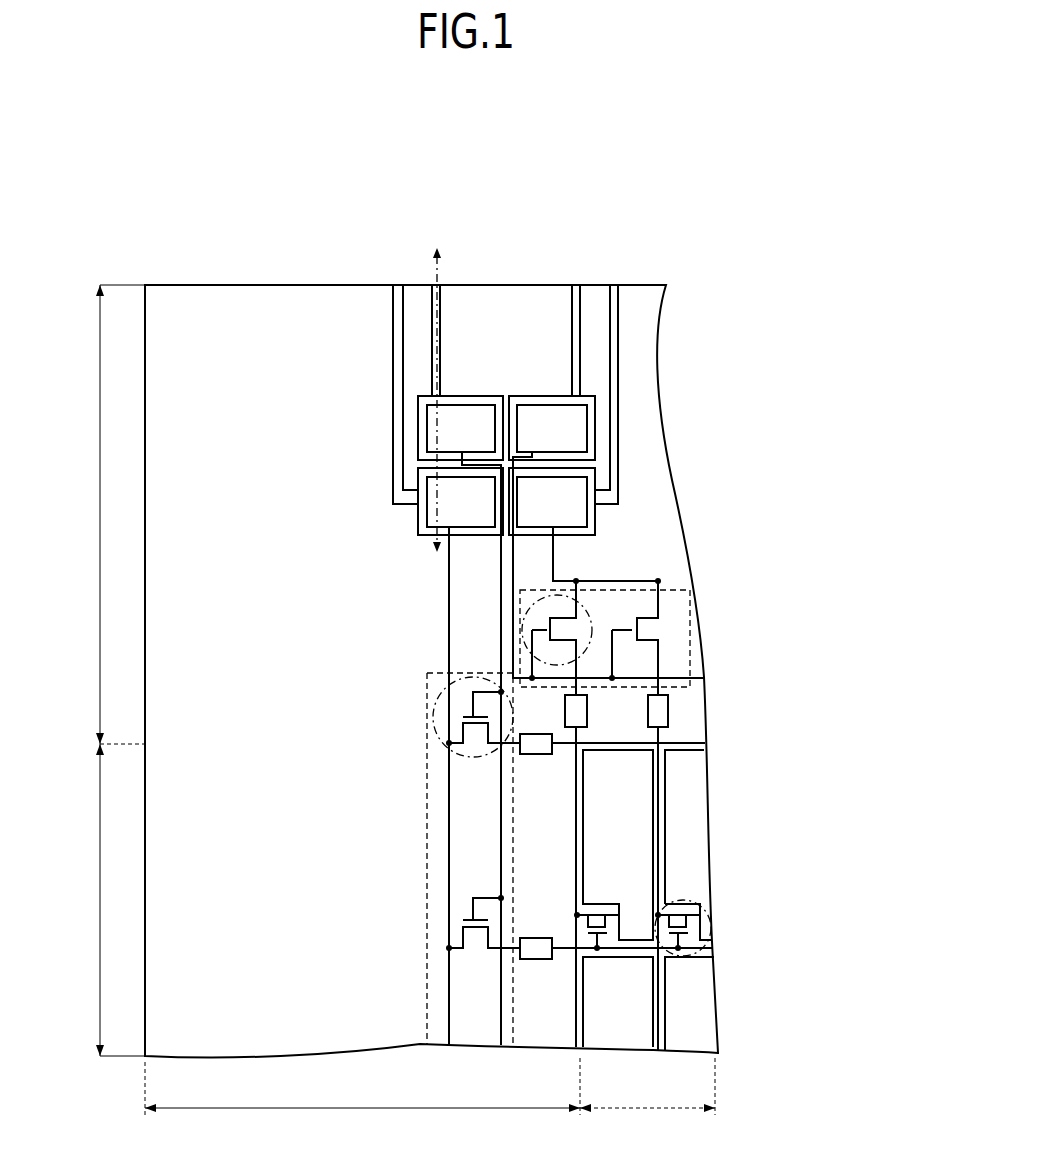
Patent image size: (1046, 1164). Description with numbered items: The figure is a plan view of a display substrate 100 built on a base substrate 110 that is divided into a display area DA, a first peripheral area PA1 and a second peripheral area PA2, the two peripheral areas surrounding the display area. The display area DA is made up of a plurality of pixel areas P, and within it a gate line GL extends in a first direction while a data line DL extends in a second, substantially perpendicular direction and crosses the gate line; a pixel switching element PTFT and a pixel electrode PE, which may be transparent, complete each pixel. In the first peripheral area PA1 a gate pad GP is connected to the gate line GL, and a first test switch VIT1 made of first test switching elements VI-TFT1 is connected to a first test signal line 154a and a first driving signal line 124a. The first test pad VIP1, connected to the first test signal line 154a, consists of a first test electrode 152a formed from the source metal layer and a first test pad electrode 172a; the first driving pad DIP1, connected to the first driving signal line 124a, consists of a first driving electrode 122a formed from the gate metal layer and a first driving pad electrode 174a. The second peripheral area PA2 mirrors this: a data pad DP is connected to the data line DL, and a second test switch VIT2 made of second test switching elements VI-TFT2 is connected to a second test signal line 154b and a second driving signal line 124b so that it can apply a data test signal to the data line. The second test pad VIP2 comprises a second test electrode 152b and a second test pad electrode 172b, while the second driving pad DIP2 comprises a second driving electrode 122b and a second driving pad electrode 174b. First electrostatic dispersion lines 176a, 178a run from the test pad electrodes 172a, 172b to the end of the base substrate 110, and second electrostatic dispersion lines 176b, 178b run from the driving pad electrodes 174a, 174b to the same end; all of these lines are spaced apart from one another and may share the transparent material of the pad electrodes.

The display substrate 100 is at (457, 160).
The base substrate 110 is at (239, 300).
The first line of the first electrostatic dispersion lines 176a is at (392, 302).
The first line of the second electrostatic dispersion lines 176b is at (442, 302).
The second line of the first electrostatic dispersion lines 178a is at (614, 314).
The second line of the second electrostatic dispersion lines 178b is at (574, 314).
The first driving pad electrode 174a is at (428, 411).
The first driving electrode 122a is at (436, 442).
The first test pad electrode 172a is at (420, 487).
The first test electrode 152a is at (433, 516).
The second driving pad electrode 174b is at (588, 410).
The second driving electrode 122b is at (577, 440).
The second test pad electrode 172b is at (599, 489).
The second test electrode 152b is at (577, 518).
The first driving signal line 124a is at (500, 610).
The first test signal line 154a is at (449, 585).
The second driving signal line 124b is at (525, 593).
The second test signal line 154b is at (555, 551).
The first driving pad DIP1 is at (369, 428).
The second driving pad DIP2 is at (673, 428).
The first test pad VIP1 is at (365, 501).
The second test pad VIP2 is at (673, 501).
The first test switch VIT1 is at (410, 859).
The second test switch VIT2 is at (581, 638).
The first test switching element VI-TFT1 is at (430, 717).
The second test switching element VI-TFT2 is at (537, 658).
The gate pad GP is at (533, 756).
The gate line GL is at (712, 950).
The data pad DP is at (669, 710).
The data line DL is at (662, 796).
The pixel electrode PE is at (688, 836).
The pixel area P is at (627, 810).
The pixel switching element PTFT is at (680, 894).
The first peripheral area PA1 is at (362, 1088).
The second peripheral area PA2 is at (103, 514).
The display area DA is at (391, 929).